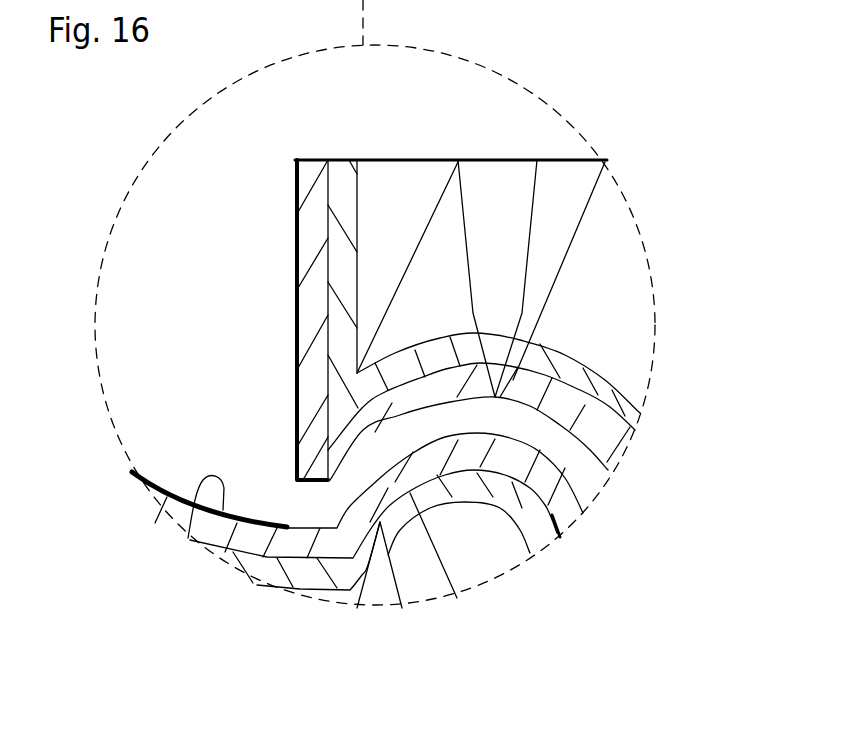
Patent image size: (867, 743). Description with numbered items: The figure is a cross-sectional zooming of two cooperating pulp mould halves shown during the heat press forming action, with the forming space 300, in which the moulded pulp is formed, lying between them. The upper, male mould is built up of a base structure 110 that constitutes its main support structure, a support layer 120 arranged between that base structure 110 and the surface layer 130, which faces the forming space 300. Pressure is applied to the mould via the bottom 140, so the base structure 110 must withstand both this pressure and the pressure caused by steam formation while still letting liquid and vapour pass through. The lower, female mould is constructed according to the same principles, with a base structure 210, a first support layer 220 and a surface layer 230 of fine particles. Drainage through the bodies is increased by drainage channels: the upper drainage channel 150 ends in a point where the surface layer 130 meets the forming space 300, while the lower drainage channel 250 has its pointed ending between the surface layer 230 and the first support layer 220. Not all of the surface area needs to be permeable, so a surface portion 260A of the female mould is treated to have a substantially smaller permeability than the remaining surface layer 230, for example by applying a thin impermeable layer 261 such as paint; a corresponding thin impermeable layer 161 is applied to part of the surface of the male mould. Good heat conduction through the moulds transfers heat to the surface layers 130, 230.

The base structure 110 is at (428, 177).
The support layer 120 is at (590, 382).
The surface layer 130 is at (607, 457).
The bottom 140 is at (393, 160).
The drainage channel 150 is at (511, 197).
The impermeable layer 161 is at (296, 203).
The base structure 210 is at (420, 600).
The support layer 220 is at (540, 530).
The surface layer 230 is at (567, 507).
The drainage channel 250 is at (378, 588).
The surface portion 260A is at (186, 476).
The impermeable layer 261 is at (188, 538).
The forming space 300 is at (552, 443).